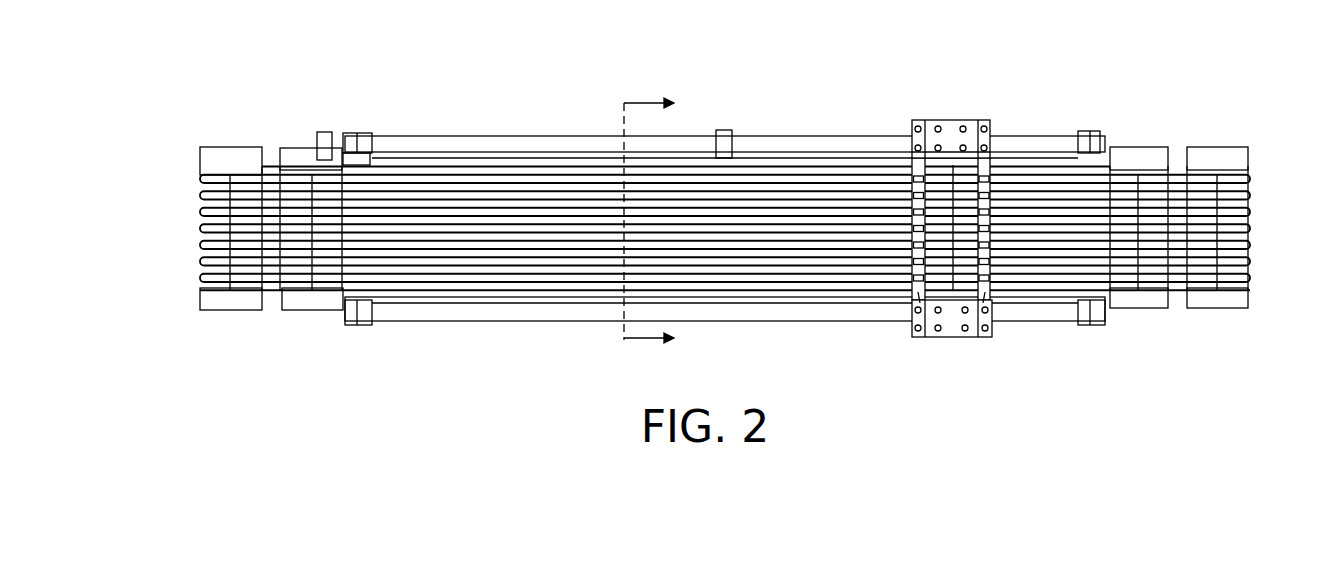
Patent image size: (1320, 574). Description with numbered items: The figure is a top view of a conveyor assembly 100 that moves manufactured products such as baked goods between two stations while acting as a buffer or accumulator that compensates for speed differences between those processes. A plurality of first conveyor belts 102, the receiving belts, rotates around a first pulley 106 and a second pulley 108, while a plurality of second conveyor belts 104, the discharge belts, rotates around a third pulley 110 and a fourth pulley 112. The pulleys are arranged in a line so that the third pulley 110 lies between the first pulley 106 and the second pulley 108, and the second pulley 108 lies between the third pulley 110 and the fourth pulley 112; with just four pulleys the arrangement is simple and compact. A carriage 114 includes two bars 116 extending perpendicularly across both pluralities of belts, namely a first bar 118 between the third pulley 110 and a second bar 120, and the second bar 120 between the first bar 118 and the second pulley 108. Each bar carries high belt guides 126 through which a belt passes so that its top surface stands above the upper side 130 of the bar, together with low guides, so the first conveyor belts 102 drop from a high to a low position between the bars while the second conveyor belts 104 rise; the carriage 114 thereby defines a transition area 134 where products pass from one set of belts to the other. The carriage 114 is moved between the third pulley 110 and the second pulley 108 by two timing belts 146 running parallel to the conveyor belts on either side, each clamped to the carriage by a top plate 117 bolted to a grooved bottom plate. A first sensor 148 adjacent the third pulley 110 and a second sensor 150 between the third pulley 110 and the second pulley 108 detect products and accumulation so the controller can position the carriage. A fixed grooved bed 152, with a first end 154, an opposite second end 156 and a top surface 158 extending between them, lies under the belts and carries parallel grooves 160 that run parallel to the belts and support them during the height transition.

The conveyor assembly 100 is at (348, 83).
The first conveyor belt 102 is at (200, 178).
The second conveyor belt 104 is at (1250, 176).
The first pulley 106 is at (250, 312).
The second pulley 108 is at (1120, 310).
The third pulley 110 is at (333, 312).
The fourth pulley 112 is at (1245, 310).
The carriage 114 is at (947, 114).
The bars 116 is at (915, 120).
The top plate 117 is at (950, 327).
The first bar 118 is at (910, 135).
The second bar 120 is at (988, 122).
The high belt guides 126 is at (910, 168).
The upper side 130 is at (913, 318).
The transition area 134 is at (948, 225).
The timing belts 146 is at (463, 148).
The first sensor 148 is at (324, 131).
The second sensor 150 is at (727, 130).
The grooved bed 152 is at (385, 297).
The first end 154 is at (363, 166).
The second end 156 is at (1085, 296).
The top surface 158 is at (518, 162).
The parallel grooves 160 is at (588, 300).